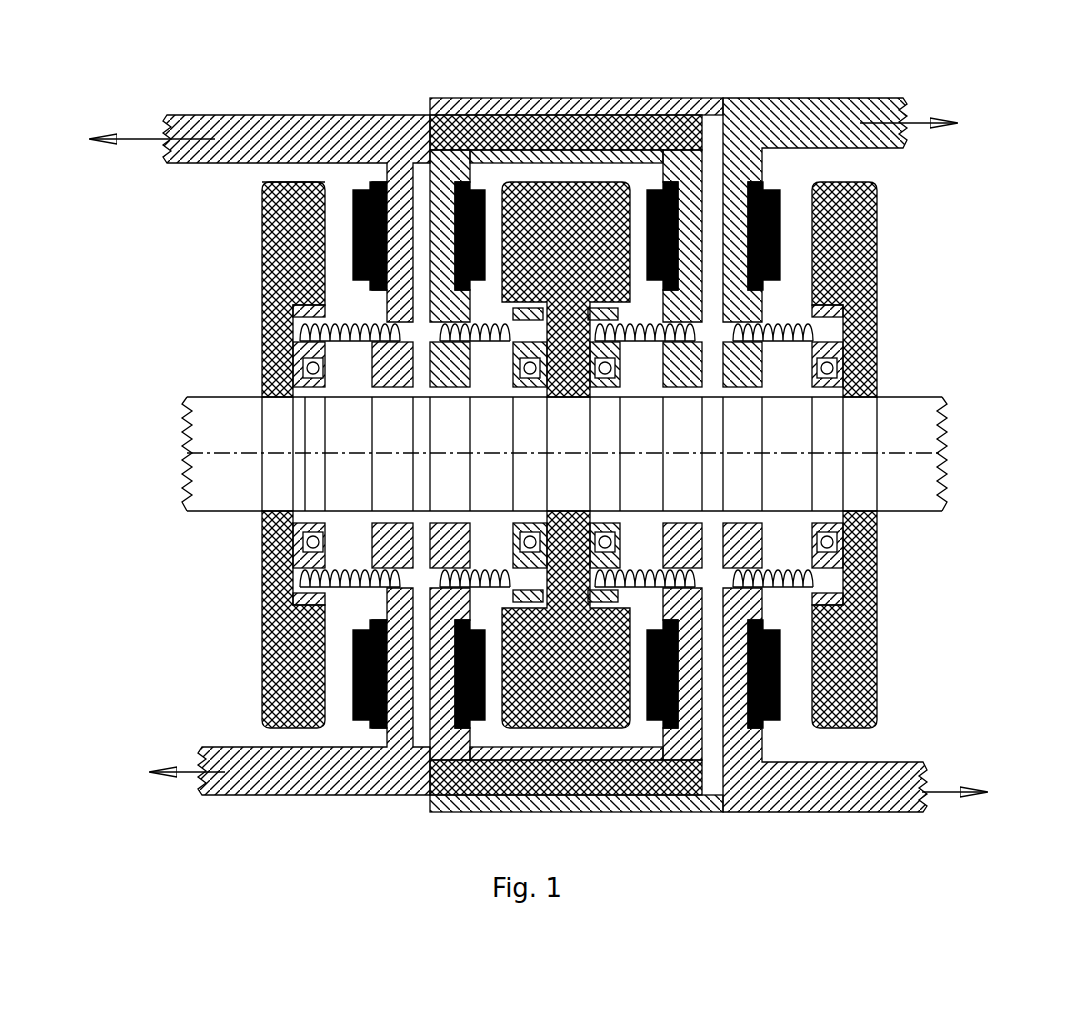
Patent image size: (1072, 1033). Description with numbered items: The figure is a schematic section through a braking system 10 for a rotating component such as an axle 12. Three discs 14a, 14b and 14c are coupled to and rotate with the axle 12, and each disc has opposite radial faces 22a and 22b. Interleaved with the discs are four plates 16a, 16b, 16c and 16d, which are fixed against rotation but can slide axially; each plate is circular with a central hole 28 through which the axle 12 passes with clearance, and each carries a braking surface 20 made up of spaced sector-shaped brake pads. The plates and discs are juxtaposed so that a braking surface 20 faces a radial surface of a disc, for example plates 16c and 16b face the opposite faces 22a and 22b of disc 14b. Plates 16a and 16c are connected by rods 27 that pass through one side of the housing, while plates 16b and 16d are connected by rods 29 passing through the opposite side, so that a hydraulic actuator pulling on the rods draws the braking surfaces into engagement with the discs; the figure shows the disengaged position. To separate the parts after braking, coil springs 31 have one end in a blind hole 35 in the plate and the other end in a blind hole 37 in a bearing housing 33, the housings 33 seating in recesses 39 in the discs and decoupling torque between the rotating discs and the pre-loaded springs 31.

The braking system 10 is at (962, 492).
The axle 12 is at (222, 453).
The disc 14a is at (268, 254).
The disc 14b is at (565, 245).
The disc 14c is at (813, 190).
The plate 16a is at (265, 191).
The plate 16b is at (267, 327).
The plate 16c is at (877, 328).
The plate 16d is at (723, 398).
The braking surface 20 is at (455, 250).
The radial face 22a is at (505, 667).
The radial face 22b is at (640, 672).
The rods 27 is at (293, 150).
The central hole 28 is at (597, 487).
The rods 29 is at (870, 125).
The coil springs 31 is at (733, 400).
The bearing housings 33 is at (670, 398).
The blind hole 35 is at (305, 443).
The blind hole 37 is at (397, 334).
The recesses 39 is at (345, 686).